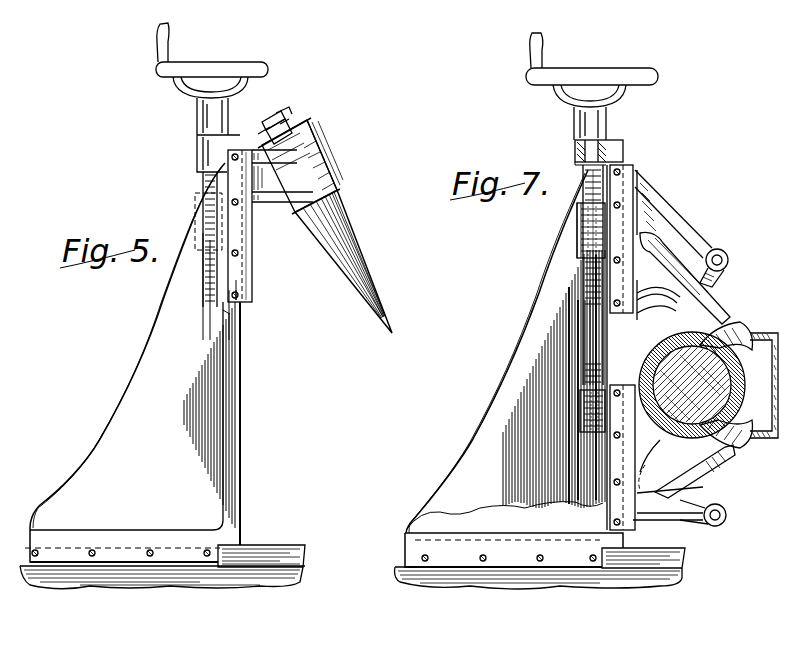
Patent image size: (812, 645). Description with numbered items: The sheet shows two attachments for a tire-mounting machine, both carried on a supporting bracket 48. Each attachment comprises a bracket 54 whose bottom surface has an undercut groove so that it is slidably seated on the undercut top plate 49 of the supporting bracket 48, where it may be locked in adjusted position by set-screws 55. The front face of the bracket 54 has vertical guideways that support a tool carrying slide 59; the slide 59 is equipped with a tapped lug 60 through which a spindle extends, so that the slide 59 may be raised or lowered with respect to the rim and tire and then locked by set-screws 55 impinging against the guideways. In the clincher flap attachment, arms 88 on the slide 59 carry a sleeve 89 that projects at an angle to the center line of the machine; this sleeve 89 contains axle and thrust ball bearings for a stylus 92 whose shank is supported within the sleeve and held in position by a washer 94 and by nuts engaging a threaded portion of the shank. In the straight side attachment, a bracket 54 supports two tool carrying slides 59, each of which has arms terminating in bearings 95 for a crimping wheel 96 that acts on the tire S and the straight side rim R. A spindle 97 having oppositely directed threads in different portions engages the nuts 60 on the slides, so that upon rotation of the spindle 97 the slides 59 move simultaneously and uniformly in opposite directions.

In FIG. 5, the supporting bracket 48 is at (288, 575).
In FIG. 7, the supporting bracket 48 is at (425, 580).
In FIG. 5, the undercut top plate 49 is at (300, 545).
In FIG. 7, the undercut top plate 49 is at (690, 558).
In FIG. 5, the bracket 54 is at (148, 398).
In FIG. 7, the bracket 54 is at (456, 492).
In FIG. 5, the set-screw 55 is at (151, 552).
In FIG. 5, the tool carrying slide 59 is at (245, 283).
In FIG. 7, the tool carrying slide 59 is at (606, 171).
In FIG. 7, the tapped lug 60 is at (582, 233).
In FIG. 5, the arm 88 is at (282, 195).
In FIG. 5, the sleeve 89 is at (333, 165).
In FIG. 5, the stylus 92 is at (370, 262).
In FIG. 5, the washer 94 is at (270, 142).
In FIG. 7, the bearing 95 is at (712, 256).
In FIG. 7, the crimping wheel 96 is at (728, 318).
In FIG. 7, the spindle 97 is at (576, 365).
In FIG. 7, the tire S is at (667, 346).
In FIG. 7, the straight side rim R is at (775, 438).